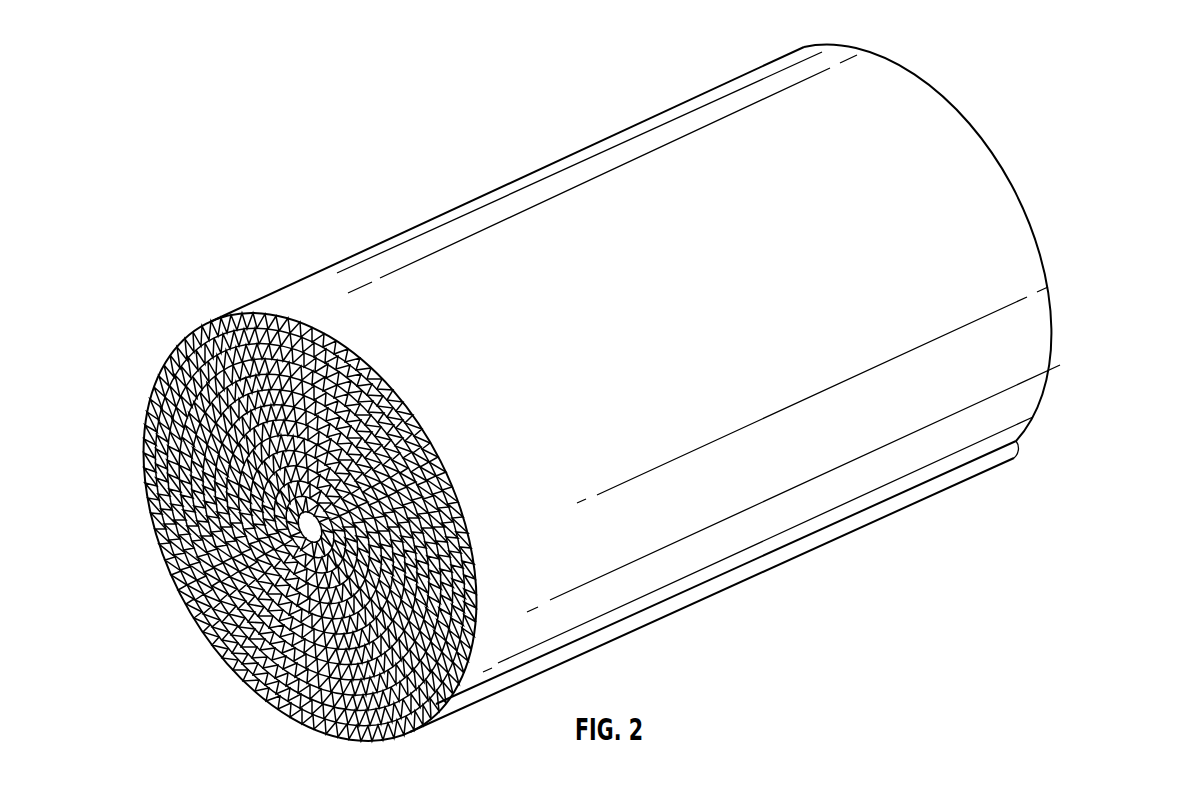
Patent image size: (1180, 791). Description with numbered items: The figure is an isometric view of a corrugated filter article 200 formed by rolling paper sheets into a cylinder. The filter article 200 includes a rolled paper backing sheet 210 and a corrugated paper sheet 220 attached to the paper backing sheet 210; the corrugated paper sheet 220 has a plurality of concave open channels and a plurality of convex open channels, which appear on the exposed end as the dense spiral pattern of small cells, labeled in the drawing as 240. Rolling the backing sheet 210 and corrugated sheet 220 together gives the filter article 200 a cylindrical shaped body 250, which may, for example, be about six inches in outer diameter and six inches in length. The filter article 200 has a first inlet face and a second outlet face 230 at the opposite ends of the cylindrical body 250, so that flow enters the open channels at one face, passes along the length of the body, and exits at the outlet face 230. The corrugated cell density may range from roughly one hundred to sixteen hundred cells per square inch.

The corrugated filter article 200 is at (1080, 356).
The rolled paper backing sheet 210 is at (150, 484).
The corrugated paper sheet 220 is at (150, 402).
The second outlet face 230 is at (983, 113).
The cells 240 is at (183, 580).
The cylindrical shaped body 250 is at (510, 237).